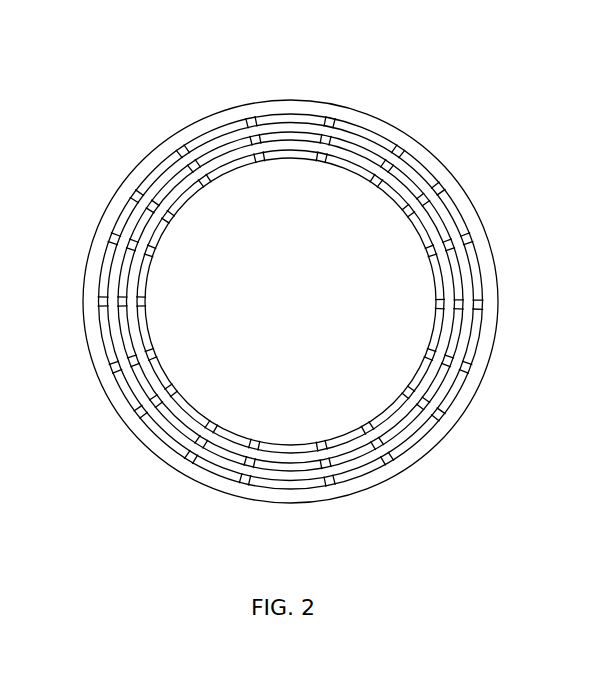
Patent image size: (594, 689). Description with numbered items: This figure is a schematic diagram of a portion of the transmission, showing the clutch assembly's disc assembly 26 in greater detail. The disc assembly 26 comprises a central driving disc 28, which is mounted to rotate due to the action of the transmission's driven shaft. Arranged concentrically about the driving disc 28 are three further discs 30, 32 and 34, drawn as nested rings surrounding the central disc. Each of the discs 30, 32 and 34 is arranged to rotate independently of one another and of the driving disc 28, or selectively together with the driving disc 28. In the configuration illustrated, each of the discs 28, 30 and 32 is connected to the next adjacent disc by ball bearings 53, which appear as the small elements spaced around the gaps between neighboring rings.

The disc assembly 26 is at (187, 81).
The central driving disc 28 is at (418, 149).
The disc 30 is at (368, 186).
The disc 32 is at (335, 126).
The disc 34 is at (299, 101).
The ball bearings 53 is at (431, 182).